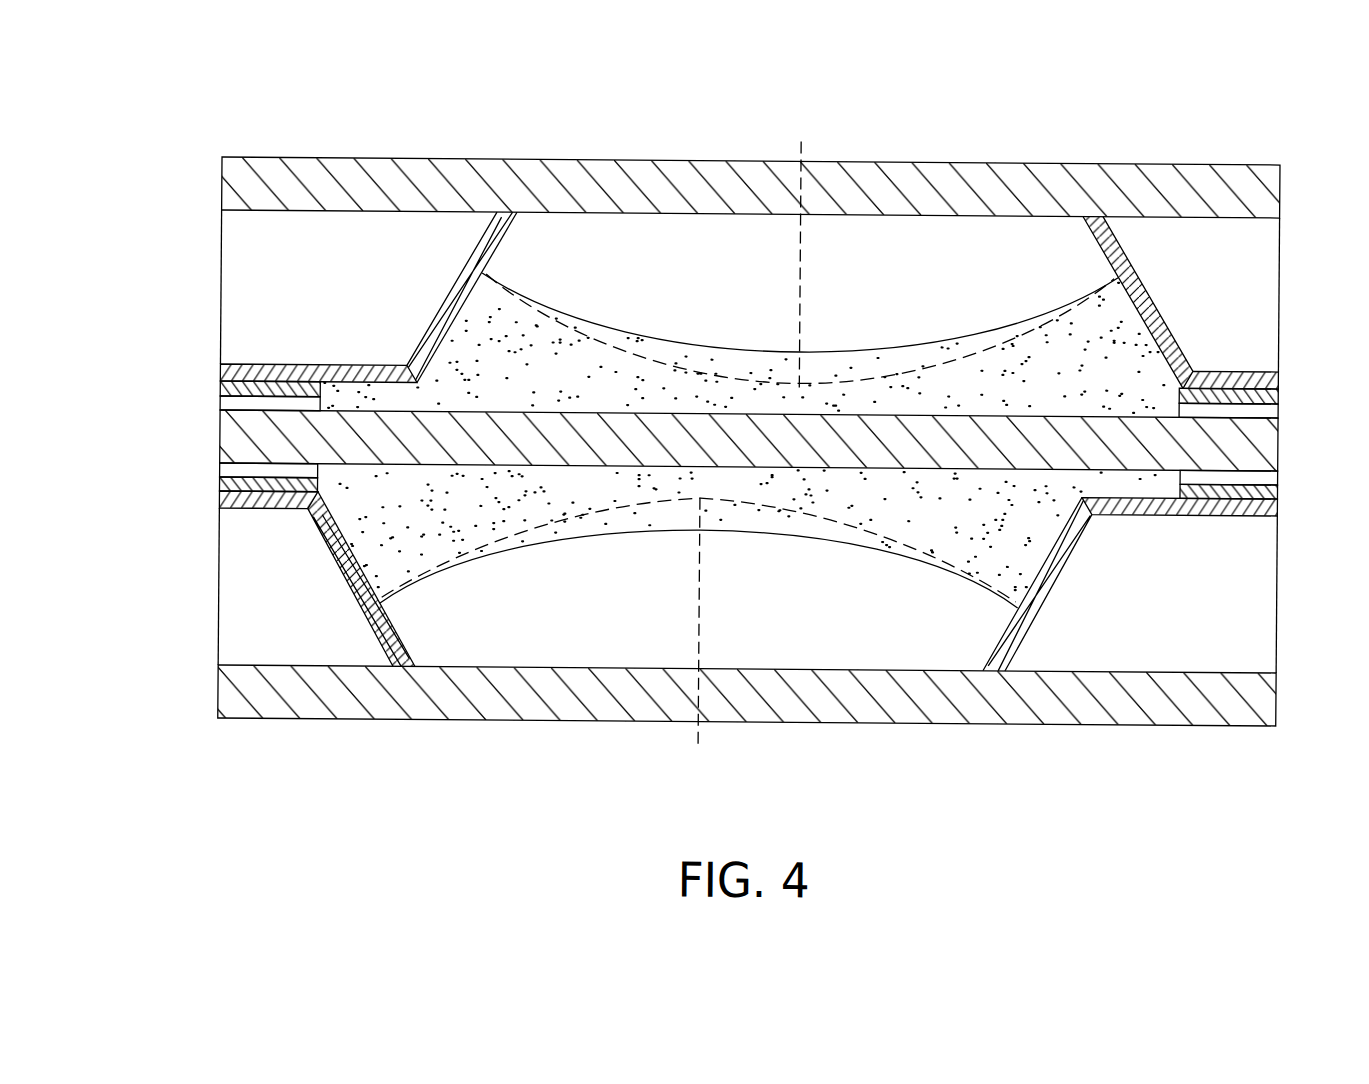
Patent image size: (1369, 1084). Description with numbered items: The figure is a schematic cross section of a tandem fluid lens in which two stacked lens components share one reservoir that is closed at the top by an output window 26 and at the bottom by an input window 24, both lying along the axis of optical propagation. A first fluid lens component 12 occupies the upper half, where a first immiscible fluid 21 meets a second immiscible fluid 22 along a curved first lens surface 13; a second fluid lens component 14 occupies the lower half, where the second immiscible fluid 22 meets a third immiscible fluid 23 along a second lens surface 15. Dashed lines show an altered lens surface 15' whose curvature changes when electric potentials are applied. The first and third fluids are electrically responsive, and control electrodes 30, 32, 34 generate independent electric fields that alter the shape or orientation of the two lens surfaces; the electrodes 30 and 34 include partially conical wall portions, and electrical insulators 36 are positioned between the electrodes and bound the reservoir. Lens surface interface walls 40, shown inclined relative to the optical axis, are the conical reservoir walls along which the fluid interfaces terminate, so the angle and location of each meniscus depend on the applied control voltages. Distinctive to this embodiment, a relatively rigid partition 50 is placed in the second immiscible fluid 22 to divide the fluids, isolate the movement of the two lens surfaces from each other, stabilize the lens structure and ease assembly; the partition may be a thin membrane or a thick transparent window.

The first fluid lens component 12 is at (157, 322).
The first lens surface 13 is at (896, 340).
The second fluid lens component 14 is at (160, 577).
The second lens surface 15 is at (699, 577).
The altered lens surface 15' is at (748, 438).
The first immiscible fluid 21 is at (629, 270).
The second immiscible fluid 22 is at (552, 393).
The third immiscible fluid 23 is at (626, 612).
The input window 24 is at (1027, 718).
The output window 26 is at (974, 166).
The control electrode 30 is at (1149, 299).
The control electrode 32 is at (1285, 405).
The control electrode 34 is at (1145, 510).
The electrical insulator 36 is at (1285, 373).
The lens surface interface wall 40 is at (444, 355).
The rigid partition 50 is at (1285, 432).